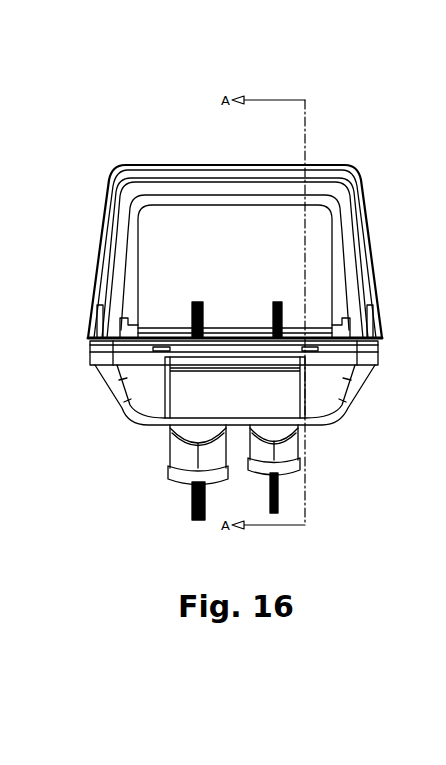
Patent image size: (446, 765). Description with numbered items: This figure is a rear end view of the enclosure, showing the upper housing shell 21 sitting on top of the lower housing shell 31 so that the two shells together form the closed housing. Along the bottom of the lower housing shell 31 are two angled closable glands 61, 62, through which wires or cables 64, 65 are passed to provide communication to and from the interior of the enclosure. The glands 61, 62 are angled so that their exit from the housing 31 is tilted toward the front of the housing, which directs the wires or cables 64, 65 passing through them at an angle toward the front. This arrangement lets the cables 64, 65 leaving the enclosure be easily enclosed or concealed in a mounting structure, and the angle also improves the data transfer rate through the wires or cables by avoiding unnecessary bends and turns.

The upper housing shell 21 is at (345, 168).
The lower housing shell 31 is at (362, 386).
The angled closable gland 61 is at (186, 470).
The angled closable gland 62 is at (292, 468).
The wire or cable 64 is at (192, 302).
The wire or cable 65 is at (272, 303).